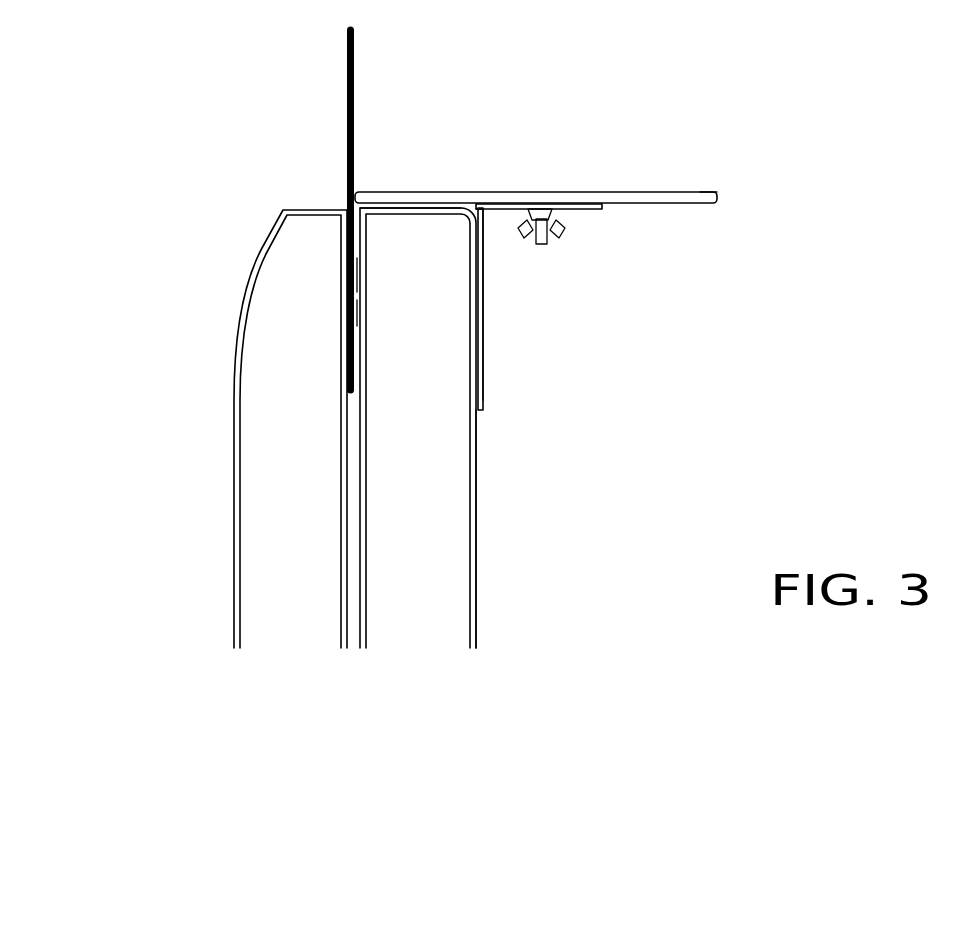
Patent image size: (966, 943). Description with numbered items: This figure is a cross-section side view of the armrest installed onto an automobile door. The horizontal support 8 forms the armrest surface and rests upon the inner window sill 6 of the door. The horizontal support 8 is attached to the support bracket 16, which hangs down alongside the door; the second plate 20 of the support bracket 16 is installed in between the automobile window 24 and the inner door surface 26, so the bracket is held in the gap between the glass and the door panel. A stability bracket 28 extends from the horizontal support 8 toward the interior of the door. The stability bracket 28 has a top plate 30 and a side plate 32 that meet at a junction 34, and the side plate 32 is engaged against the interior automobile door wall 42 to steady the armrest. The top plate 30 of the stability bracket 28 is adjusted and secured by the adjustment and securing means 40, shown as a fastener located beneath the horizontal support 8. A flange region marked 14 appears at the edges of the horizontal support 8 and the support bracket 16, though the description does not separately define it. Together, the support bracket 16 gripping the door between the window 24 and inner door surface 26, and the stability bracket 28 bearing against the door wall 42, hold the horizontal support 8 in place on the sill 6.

The inner window sill 6 is at (445, 207).
The horizontal support 8 is at (558, 192).
The flange 14 is at (389, 207).
The support bracket 16 is at (354, 258).
The second plate 20 is at (354, 281).
The automobile window 24 is at (344, 73).
The inner door surface 26 is at (354, 335).
The stability bracket 28 is at (488, 263).
The top plate 30 is at (578, 212).
The side plate 32 is at (483, 373).
The junction 34 is at (485, 212).
The adjustment and securing means 40 is at (552, 240).
The interior automobile door wall 42 is at (478, 465).